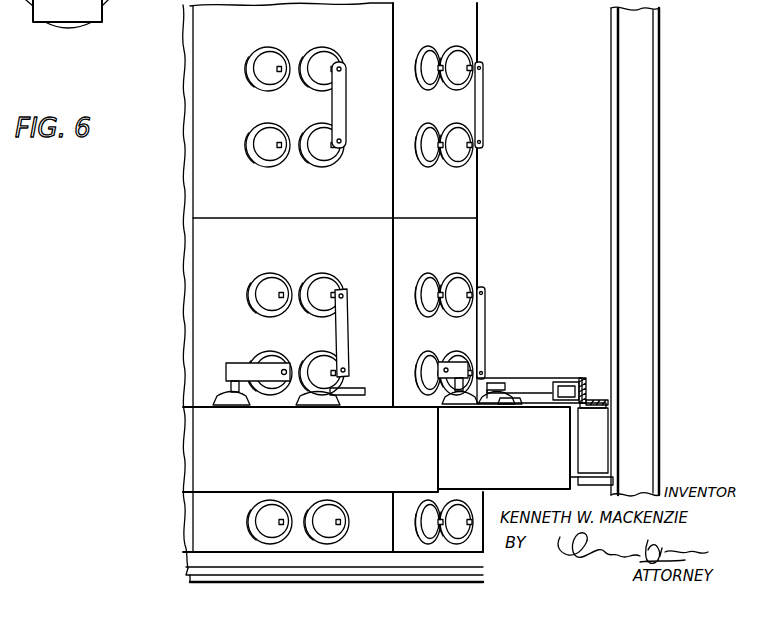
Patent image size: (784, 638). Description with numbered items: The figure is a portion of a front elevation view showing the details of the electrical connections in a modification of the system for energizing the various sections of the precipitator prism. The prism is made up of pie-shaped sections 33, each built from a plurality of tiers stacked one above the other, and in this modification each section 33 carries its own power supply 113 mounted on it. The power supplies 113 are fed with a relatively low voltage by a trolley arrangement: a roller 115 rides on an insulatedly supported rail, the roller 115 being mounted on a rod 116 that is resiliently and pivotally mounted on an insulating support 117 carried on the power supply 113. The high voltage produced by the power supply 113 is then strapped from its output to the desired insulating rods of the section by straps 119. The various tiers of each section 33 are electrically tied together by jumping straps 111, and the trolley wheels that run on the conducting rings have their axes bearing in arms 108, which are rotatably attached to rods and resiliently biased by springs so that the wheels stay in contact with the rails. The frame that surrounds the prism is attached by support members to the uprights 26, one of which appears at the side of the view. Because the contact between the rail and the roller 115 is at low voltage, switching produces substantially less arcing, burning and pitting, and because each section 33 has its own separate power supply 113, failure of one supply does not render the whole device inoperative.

The upright 26 is at (640, 83).
The pie-shaped section 33 is at (318, 200).
The arm 108 is at (327, 50).
The jumping strap 111 is at (341, 117).
The power supply 113 is at (262, 456).
The roller 115 is at (569, 382).
The rod 116 is at (528, 392).
The insulating support 117 is at (496, 398).
The strap 119 is at (247, 368).